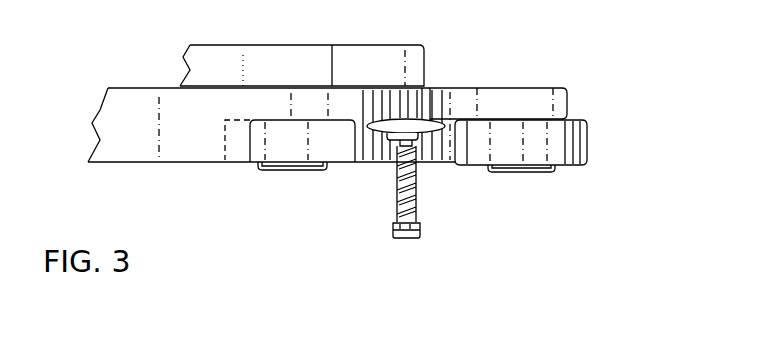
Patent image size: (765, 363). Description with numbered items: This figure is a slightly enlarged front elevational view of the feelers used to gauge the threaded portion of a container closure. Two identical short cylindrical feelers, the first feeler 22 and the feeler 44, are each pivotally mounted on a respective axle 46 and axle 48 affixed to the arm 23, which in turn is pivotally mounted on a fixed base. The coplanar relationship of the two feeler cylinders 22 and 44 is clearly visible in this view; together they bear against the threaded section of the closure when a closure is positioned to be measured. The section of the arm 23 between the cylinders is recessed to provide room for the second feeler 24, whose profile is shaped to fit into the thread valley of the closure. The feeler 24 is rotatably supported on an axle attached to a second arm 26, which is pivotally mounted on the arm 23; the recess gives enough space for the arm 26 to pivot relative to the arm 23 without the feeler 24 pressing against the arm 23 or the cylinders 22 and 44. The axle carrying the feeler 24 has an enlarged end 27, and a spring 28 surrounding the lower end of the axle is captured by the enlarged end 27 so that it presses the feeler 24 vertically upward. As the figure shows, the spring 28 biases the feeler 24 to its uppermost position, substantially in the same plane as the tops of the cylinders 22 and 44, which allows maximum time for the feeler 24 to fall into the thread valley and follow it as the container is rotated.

The first feeler 22 is at (336, 163).
The arm 23 is at (512, 89).
The second feeler 24 is at (426, 122).
The second arm 26 is at (325, 52).
The enlarged end 27 is at (420, 233).
The spring 28 is at (417, 194).
The cylindrical feeler 44 is at (590, 139).
The axle 46 is at (282, 171).
The axle 48 is at (527, 173).